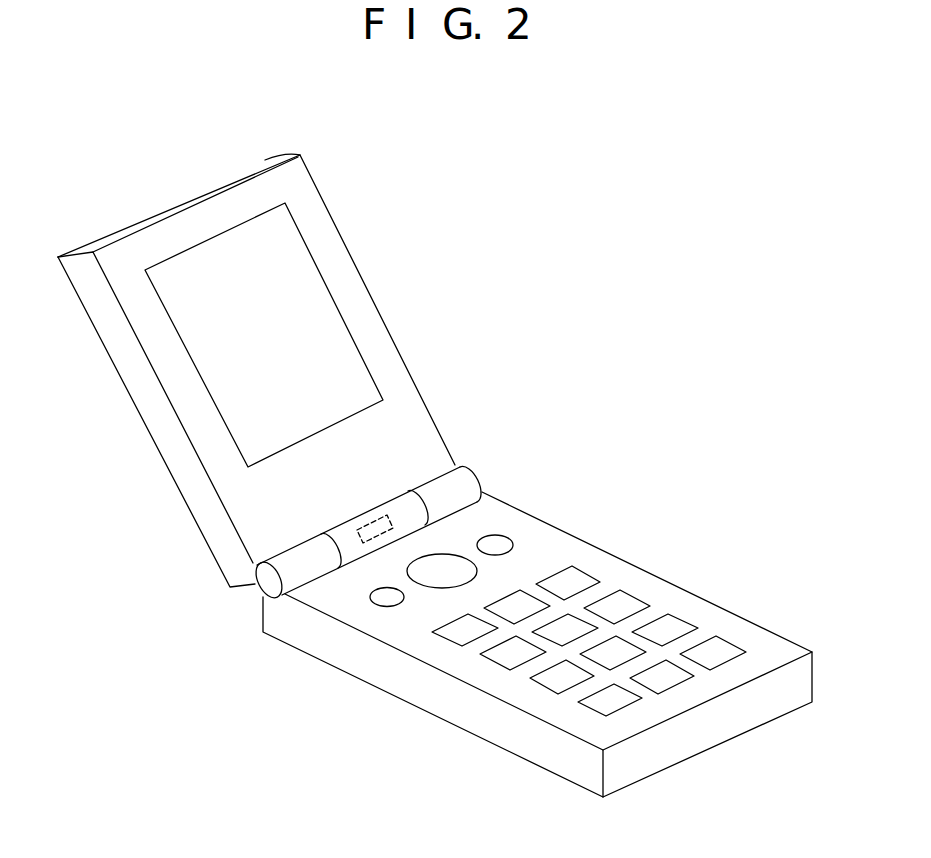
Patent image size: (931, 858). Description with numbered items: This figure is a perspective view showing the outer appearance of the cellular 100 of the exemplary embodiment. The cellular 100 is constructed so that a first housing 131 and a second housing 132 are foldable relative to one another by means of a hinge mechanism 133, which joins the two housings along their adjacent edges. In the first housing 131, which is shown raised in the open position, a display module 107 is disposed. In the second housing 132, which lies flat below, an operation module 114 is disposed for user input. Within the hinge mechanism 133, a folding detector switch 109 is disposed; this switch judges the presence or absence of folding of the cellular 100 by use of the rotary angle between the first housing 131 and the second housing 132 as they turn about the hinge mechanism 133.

The cellular 100 is at (678, 263).
The display module 107 is at (320, 307).
The folding detector switch 109 is at (367, 522).
The operation module 114 is at (638, 602).
The first housing 131 is at (146, 404).
The second housing 132 is at (418, 695).
The hinge mechanism 133 is at (260, 593).